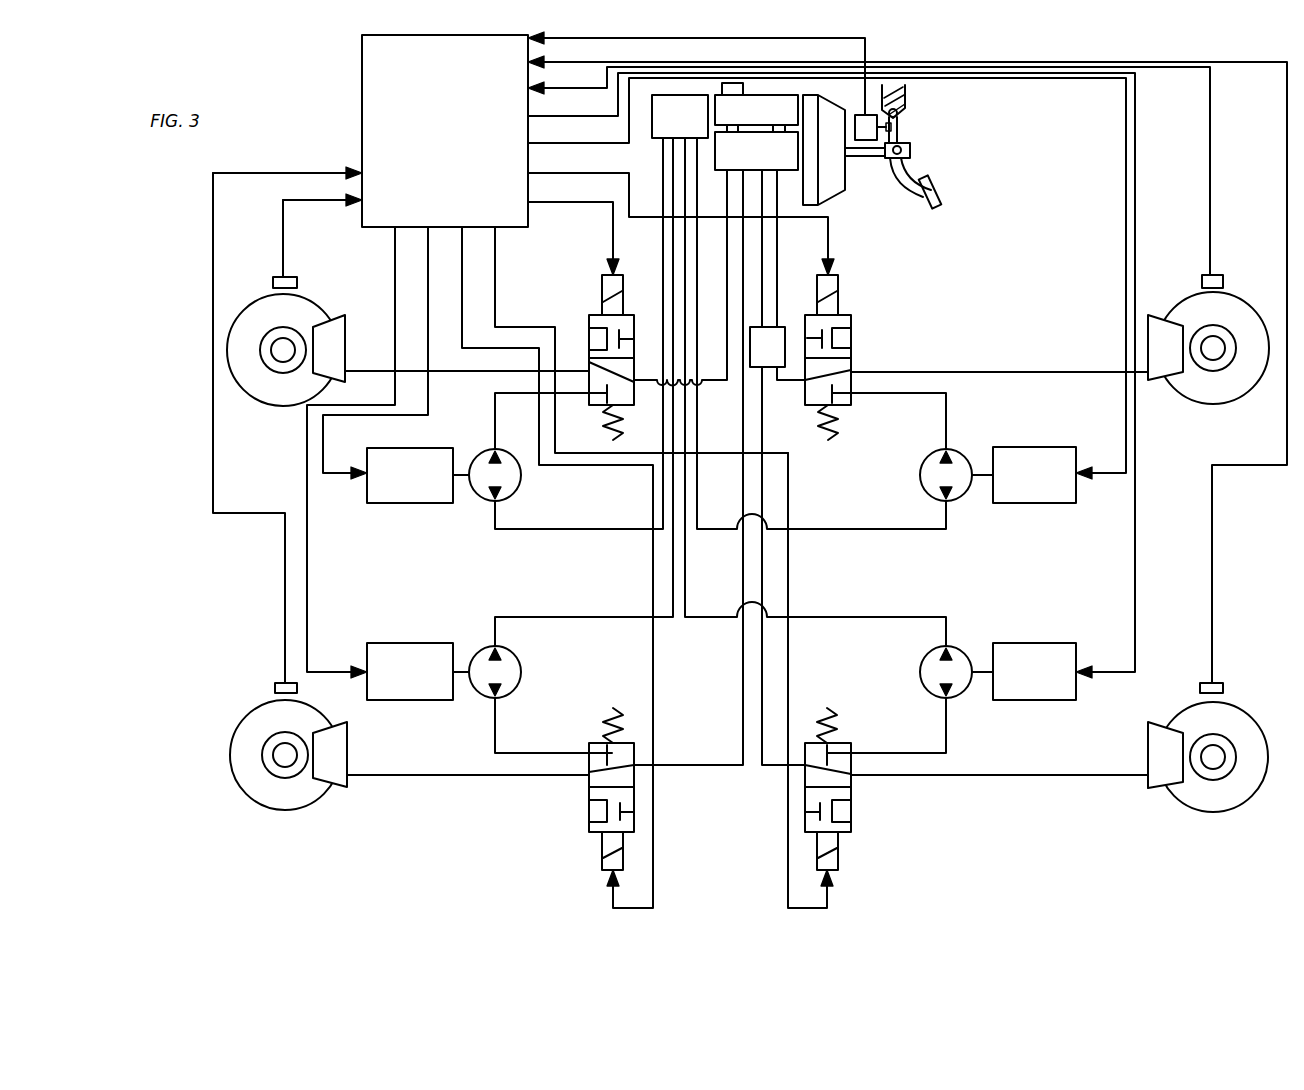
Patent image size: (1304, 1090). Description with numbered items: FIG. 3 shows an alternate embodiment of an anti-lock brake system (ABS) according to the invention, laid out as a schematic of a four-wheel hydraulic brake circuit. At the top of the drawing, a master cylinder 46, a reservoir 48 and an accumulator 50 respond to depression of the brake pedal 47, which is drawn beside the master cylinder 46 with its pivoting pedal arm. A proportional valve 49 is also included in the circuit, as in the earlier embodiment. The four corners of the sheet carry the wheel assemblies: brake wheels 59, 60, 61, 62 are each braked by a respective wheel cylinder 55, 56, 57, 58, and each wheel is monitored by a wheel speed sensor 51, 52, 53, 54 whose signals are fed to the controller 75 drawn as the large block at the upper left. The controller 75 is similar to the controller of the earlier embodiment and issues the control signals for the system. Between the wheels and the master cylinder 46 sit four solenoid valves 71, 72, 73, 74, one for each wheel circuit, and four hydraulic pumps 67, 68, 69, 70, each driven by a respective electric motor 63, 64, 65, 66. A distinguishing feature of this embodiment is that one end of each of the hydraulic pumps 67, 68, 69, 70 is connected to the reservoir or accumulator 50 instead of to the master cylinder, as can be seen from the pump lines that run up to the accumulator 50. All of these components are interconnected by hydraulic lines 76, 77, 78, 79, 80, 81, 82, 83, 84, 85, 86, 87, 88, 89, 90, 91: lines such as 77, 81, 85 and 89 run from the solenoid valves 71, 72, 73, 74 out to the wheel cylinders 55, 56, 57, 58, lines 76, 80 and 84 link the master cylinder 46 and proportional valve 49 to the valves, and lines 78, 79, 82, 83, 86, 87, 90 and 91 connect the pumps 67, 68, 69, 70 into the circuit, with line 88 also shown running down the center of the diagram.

The master cylinder 46 is at (800, 150).
The brake pedal 47 is at (937, 192).
The reservoir 48 is at (756, 107).
The proportional valve 49 is at (777, 467).
The accumulator 50 is at (680, 116).
The wheel speed sensor 51 is at (273, 282).
The wheel speed sensor 52 is at (275, 688).
The wheel speed sensor 53 is at (1208, 275).
The wheel speed sensor 54 is at (1220, 685).
The wheel cylinder 55 is at (329, 348).
The wheel cylinder 56 is at (330, 754).
The wheel cylinder 57 is at (1165, 347).
The wheel cylinder 58 is at (1165, 755).
The brake wheel 59 is at (283, 350).
The brake wheel 60 is at (285, 755).
The brake wheel 61 is at (1213, 348).
The brake wheel 62 is at (1213, 757).
The electric motor 63 is at (410, 475).
The electric motor 64 is at (410, 671).
The electric motor 65 is at (1034, 475).
The electric motor 66 is at (1034, 671).
The hydraulic pump 67 is at (487, 475).
The hydraulic pump 68 is at (487, 672).
The hydraulic pump 69 is at (956, 475).
The hydraulic pump 70 is at (956, 672).
The solenoid valve 71 is at (589, 320).
The solenoid valve 72 is at (590, 812).
The solenoid valve 73 is at (851, 320).
The solenoid valve 74 is at (851, 808).
The controller 75 is at (750, 470).
The hydraulic line 76 is at (716, 381).
The hydraulic line 77 is at (458, 373).
The hydraulic line 78 is at (518, 394).
The hydraulic line 79 is at (547, 530).
The hydraulic line 80 is at (743, 587).
The hydraulic line 81 is at (447, 777).
The hydraulic line 82 is at (589, 746).
The hydraulic line 83 is at (583, 620).
The hydraulic line 84 is at (781, 243).
The hydraulic line 85 is at (1030, 372).
The hydraulic line 86 is at (889, 394).
The hydraulic line 87 is at (857, 528).
The hydraulic line 88 is at (790, 562).
The hydraulic line 89 is at (1037, 777).
The hydraulic line 90 is at (877, 752).
The hydraulic line 91 is at (945, 616).